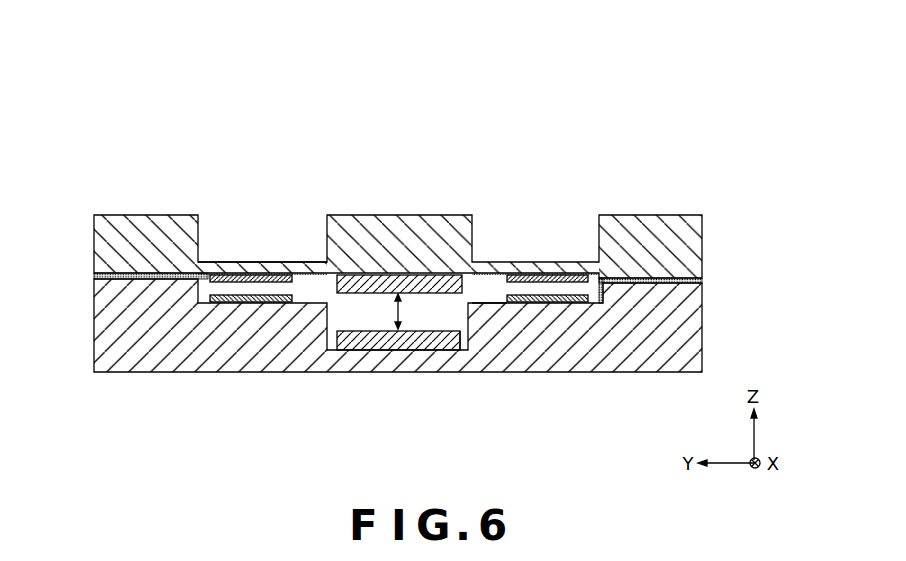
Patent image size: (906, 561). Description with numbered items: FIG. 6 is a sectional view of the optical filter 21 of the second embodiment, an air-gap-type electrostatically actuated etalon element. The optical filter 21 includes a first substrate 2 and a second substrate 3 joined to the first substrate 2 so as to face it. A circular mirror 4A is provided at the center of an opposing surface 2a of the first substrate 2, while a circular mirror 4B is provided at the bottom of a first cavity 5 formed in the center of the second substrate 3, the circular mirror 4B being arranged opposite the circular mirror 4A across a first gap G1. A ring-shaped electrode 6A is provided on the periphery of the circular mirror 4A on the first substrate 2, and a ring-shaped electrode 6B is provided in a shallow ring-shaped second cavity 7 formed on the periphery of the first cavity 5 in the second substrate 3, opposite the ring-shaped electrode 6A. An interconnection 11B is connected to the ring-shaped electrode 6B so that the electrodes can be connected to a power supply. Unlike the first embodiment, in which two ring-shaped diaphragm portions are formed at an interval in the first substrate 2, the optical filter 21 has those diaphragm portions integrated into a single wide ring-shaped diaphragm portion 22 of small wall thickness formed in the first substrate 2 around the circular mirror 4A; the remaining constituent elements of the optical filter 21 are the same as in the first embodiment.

The optical filter 21 is at (90, 161).
The first substrate 2 is at (695, 242).
The opposing surface 2a is at (323, 276).
The diaphragm portion 22 is at (230, 267).
The second substrate 3 is at (695, 338).
The interconnection 11B is at (150, 275).
The circular mirror 4A is at (377, 278).
The circular mirror 4B is at (385, 348).
The ring-shaped electrode 6A is at (257, 277).
The ring-shaped electrode 6B is at (242, 302).
The first cavity 5 is at (460, 347).
The second cavity 7 is at (487, 301).
The first gap G1 is at (411, 311).